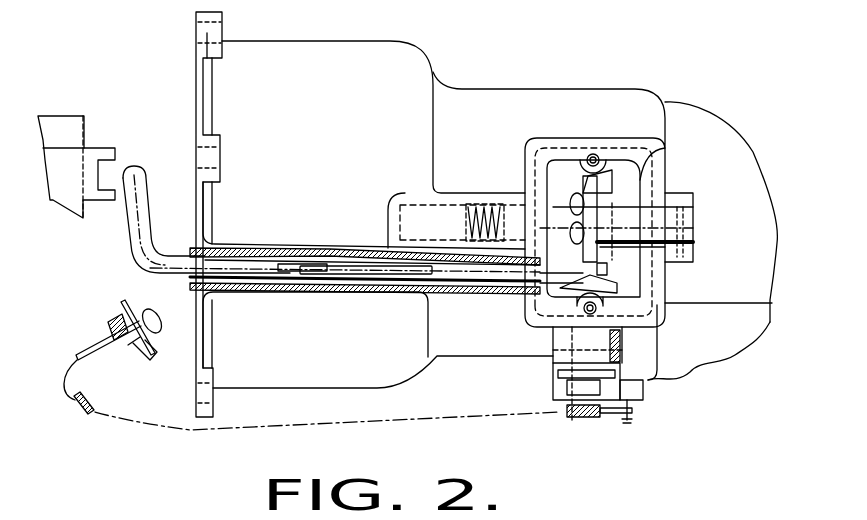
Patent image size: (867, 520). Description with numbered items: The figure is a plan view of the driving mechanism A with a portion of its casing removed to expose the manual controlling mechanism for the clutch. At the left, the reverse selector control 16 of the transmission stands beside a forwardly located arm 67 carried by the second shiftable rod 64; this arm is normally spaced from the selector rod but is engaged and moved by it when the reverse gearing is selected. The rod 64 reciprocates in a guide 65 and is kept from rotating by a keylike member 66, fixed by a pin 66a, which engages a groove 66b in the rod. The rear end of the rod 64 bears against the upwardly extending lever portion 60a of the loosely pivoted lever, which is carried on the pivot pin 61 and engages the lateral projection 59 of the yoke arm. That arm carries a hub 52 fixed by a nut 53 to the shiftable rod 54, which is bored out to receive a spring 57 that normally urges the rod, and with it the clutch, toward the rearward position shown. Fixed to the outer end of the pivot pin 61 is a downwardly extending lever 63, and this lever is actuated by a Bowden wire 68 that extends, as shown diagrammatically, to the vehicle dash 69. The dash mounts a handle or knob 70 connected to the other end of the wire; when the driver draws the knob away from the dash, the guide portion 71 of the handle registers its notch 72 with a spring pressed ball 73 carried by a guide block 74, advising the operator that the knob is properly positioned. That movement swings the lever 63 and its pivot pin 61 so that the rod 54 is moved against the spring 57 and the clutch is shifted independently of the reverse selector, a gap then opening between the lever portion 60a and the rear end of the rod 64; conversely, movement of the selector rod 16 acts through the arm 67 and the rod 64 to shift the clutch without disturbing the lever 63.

The driving mechanism A is at (421, 58).
The reverse selector control 16 is at (81, 158).
The arm 67 is at (177, 163).
The guide 65 is at (308, 288).
The second shiftable rod 64 is at (470, 280).
The keylike member 66 is at (333, 268).
The groove 66b is at (290, 265).
The pin 66a is at (395, 242).
The spring 57 is at (490, 196).
The nut 53 is at (575, 185).
The hub 52 is at (633, 205).
The shiftable rod 54 is at (663, 132).
The lateral projection 59 is at (573, 258).
The lever portion 60a is at (603, 286).
The pivot pin 61 is at (625, 338).
The lever 63 is at (643, 394).
The Bowden wire 68 is at (602, 418).
The guide block 74 is at (113, 337).
The vehicle dash 69 is at (121, 306).
The handle or knob 70 is at (157, 315).
The notch 72 is at (98, 345).
The guide portion 71 is at (87, 363).
The spring pressed ball 73 is at (120, 357).